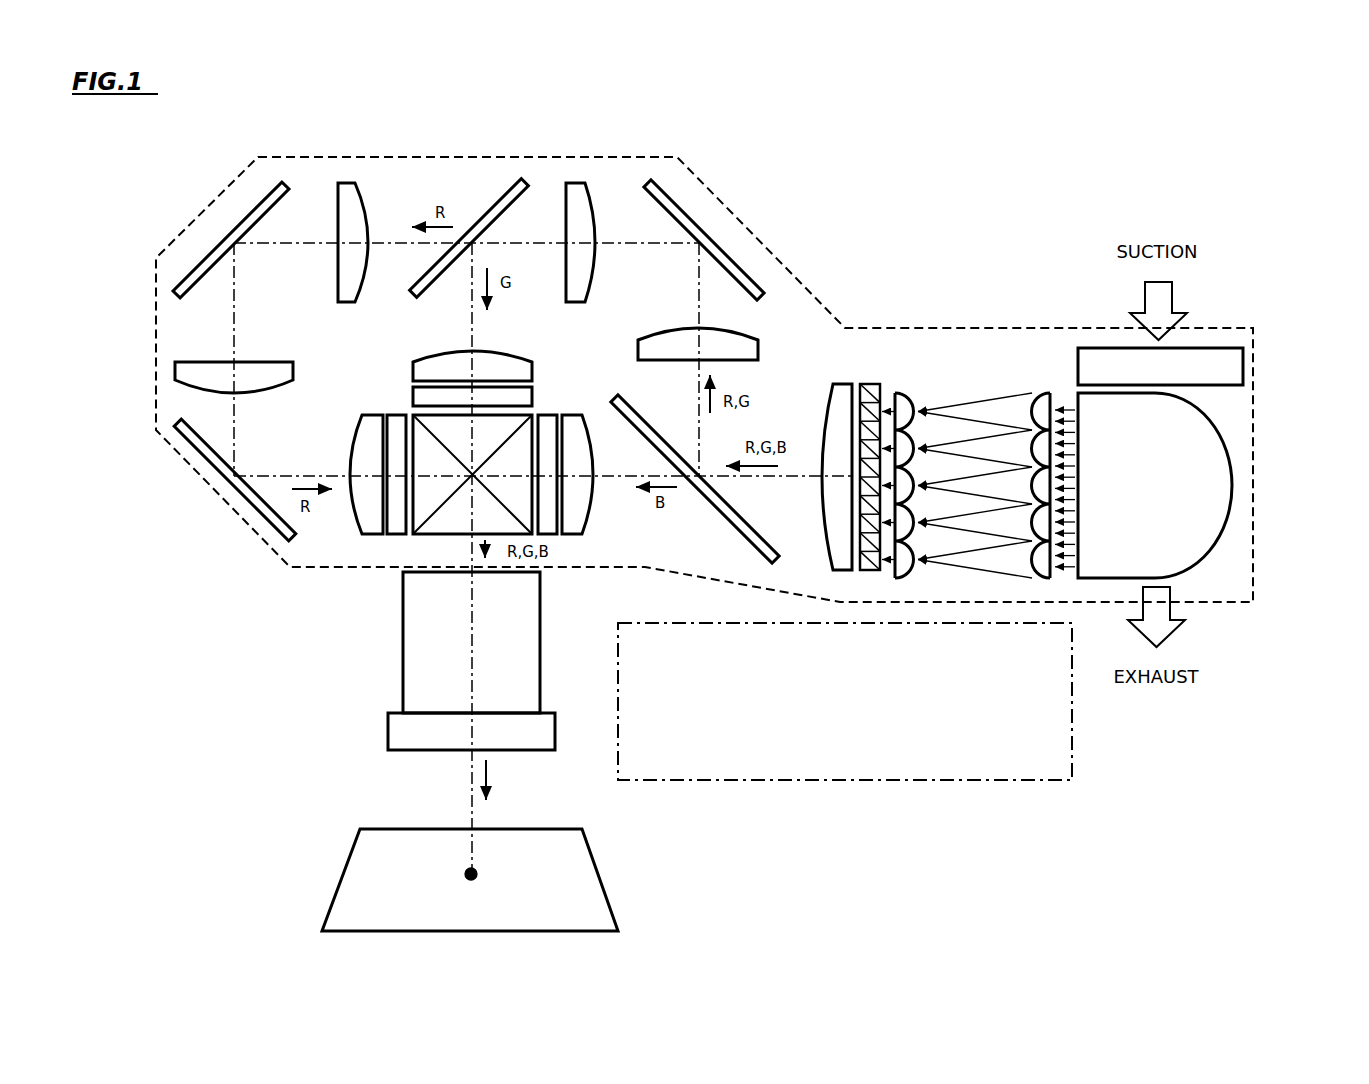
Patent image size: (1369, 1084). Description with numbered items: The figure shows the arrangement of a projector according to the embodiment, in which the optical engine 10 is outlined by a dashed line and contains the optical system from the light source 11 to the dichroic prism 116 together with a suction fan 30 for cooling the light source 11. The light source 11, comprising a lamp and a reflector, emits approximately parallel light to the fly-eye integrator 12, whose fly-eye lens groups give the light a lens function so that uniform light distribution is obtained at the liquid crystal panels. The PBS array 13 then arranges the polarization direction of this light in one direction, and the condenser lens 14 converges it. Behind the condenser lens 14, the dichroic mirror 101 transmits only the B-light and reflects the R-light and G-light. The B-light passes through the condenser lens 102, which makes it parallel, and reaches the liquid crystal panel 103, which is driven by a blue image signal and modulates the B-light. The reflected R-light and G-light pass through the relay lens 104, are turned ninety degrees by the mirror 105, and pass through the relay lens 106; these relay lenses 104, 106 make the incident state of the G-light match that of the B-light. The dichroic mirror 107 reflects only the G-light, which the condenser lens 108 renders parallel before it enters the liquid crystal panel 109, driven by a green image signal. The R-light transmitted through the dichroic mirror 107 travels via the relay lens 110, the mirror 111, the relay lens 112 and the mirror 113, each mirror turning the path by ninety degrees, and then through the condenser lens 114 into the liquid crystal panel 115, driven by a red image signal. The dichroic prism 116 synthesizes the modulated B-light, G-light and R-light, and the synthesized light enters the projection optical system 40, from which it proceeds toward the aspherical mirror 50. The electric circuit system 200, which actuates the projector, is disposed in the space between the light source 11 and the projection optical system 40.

The optical engine 10 is at (1232, 328).
The light source 11 is at (1218, 475).
The fly-eye integrator 12 is at (902, 384).
The PBS array 13 is at (866, 380).
The condenser lens 14 is at (845, 380).
The suction fan 30 is at (1093, 346).
The projection optical system 40 is at (414, 655).
The aspherical mirror 50 is at (357, 882).
The dichroic mirror 101 is at (722, 513).
The condenser lens 102 is at (578, 428).
The liquid crystal panel 103 is at (547, 420).
The relay lens 104 is at (745, 335).
The mirror 105 is at (720, 247).
The relay lens 106 is at (592, 183).
The dichroic mirror 107 is at (526, 182).
The condenser lens 108 is at (448, 360).
The liquid crystal panel 109 is at (416, 391).
The relay lens 110 is at (357, 225).
The mirror 111 is at (242, 218).
The relay lens 112 is at (256, 374).
The mirror 113 is at (222, 483).
The condenser lens 114 is at (366, 440).
The liquid crystal panel 115 is at (393, 420).
The dichroic prism 116 is at (428, 528).
The electric circuit system 200 is at (950, 783).